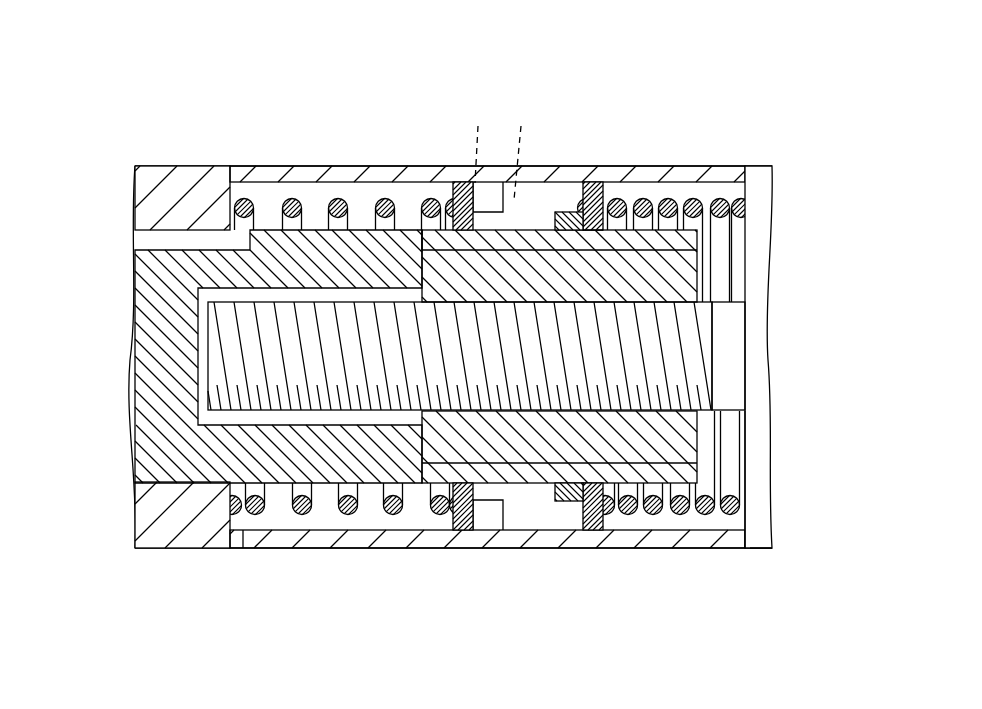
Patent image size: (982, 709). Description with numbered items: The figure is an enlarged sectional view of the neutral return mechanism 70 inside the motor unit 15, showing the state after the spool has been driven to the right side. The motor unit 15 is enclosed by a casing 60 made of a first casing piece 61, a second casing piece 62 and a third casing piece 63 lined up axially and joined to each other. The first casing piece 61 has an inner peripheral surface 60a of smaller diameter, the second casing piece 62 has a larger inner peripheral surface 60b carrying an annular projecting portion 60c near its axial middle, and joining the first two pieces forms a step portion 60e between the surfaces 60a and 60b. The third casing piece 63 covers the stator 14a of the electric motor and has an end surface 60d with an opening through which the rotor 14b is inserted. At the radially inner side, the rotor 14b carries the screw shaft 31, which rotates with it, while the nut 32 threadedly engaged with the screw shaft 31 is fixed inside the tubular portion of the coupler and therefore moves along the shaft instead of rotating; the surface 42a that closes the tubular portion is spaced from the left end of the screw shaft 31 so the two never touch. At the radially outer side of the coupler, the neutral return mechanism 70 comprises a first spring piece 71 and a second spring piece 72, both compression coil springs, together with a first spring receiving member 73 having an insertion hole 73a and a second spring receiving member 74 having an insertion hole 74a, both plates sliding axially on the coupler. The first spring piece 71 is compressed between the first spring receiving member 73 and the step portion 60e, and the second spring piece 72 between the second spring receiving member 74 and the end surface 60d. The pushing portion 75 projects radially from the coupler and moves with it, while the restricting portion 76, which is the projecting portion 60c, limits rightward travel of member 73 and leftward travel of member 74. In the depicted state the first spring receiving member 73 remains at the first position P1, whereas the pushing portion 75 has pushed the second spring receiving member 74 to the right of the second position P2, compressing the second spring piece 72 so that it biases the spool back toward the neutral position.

The motor unit 15 is at (680, 60).
The stator 14a is at (758, 549).
The rotor 14b is at (727, 358).
The screw shaft 31 is at (230, 403).
The nut 32 is at (535, 438).
The surface 42a is at (195, 350).
The casing 60 is at (166, 163).
The inner peripheral surface 60a is at (170, 483).
The inner peripheral surface 60b is at (333, 532).
The projecting portion 60c is at (495, 519).
The end surface 60d is at (748, 472).
The step portion 60e is at (236, 531).
The first casing piece 61 is at (208, 166).
The second casing piece 62 is at (342, 178).
The third casing piece 63 is at (757, 167).
The neutral return mechanism 70 is at (480, 91).
The first spring piece 71 is at (292, 200).
The second spring piece 72 is at (695, 203).
The first spring receiving member 73 is at (460, 190).
The insertion hole 73a is at (463, 232).
The second spring receiving member 74 is at (594, 195).
The insertion hole 74a is at (635, 232).
The pushing portion 75 is at (564, 216).
The restricting portion 76 is at (488, 356).
The first position P1 is at (475, 141).
The second position P2 is at (518, 150).